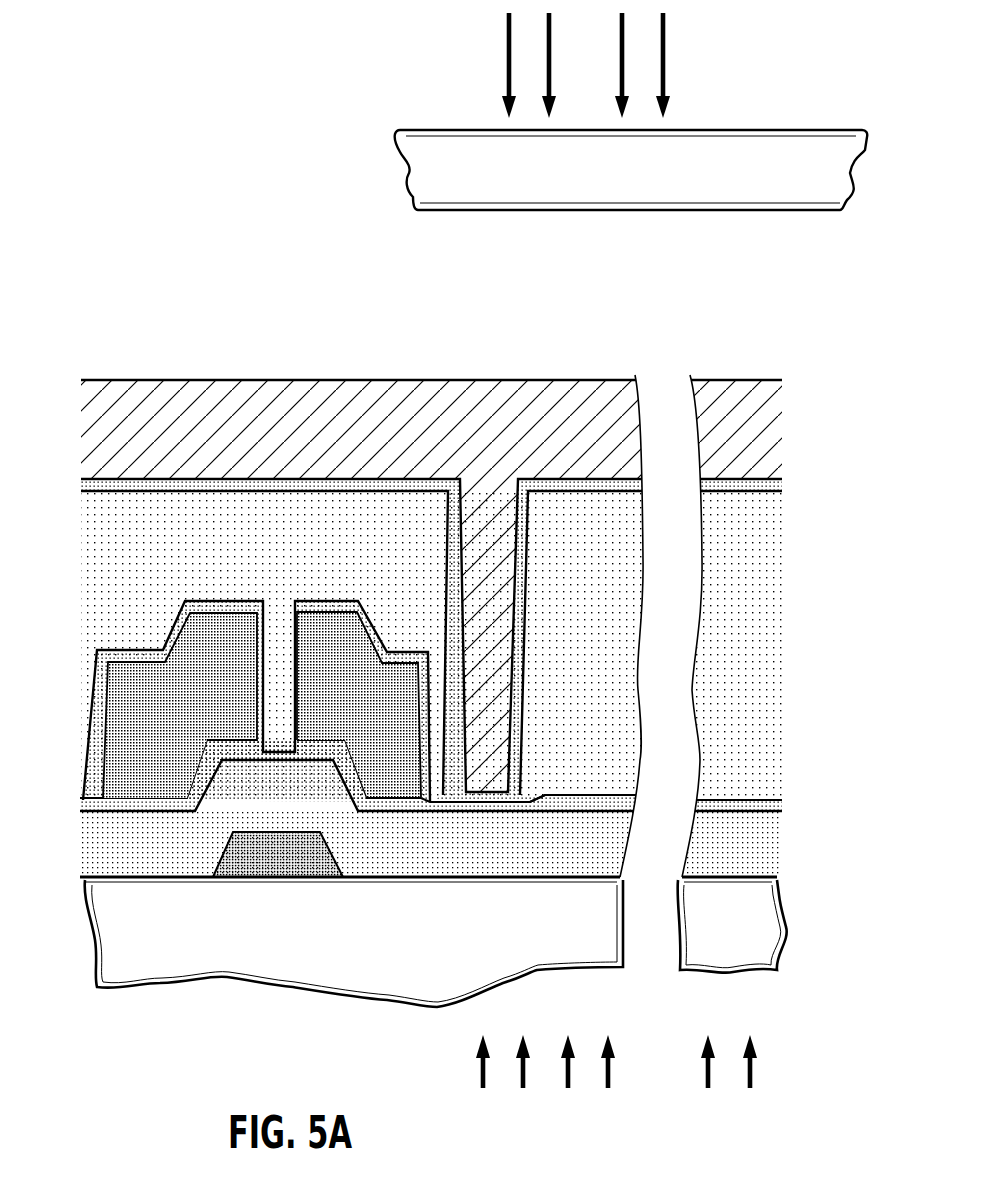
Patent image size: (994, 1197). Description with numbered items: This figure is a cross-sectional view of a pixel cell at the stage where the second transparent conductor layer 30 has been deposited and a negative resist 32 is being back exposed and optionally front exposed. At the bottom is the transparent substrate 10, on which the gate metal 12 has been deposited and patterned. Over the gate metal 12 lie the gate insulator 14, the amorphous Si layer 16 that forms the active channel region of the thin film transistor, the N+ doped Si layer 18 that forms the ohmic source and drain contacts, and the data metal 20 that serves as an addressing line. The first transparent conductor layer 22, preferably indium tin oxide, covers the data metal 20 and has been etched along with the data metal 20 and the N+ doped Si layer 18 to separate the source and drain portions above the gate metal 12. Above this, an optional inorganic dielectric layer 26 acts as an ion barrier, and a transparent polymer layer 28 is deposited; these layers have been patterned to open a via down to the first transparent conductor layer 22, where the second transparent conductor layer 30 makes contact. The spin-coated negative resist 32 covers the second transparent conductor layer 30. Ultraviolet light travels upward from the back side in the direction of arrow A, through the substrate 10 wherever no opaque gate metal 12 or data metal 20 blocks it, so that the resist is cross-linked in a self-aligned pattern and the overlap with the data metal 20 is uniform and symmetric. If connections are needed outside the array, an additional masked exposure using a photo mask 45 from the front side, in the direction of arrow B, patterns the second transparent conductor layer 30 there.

The substrate 10 is at (436, 943).
The gate metal 12 is at (285, 880).
The gate insulator 14 is at (143, 877).
The amorphous Si layer 16 is at (95, 812).
The N+ doped Si layer 18 is at (82, 798).
The data metal 20 is at (87, 770).
The first transparent conductor layer 22 is at (90, 723).
The dielectric layer 26 is at (92, 683).
The transparent polymer layer 28 is at (88, 620).
The second transparent conductor layer 30 is at (120, 478).
The negative resist 32 is at (215, 380).
The photo mask 45 is at (408, 178).
The back exposure light direction A is at (612, 1067).
The front exposure light direction B is at (665, 58).